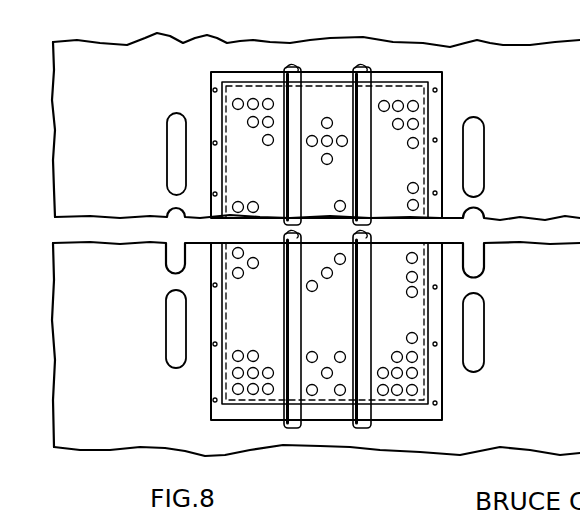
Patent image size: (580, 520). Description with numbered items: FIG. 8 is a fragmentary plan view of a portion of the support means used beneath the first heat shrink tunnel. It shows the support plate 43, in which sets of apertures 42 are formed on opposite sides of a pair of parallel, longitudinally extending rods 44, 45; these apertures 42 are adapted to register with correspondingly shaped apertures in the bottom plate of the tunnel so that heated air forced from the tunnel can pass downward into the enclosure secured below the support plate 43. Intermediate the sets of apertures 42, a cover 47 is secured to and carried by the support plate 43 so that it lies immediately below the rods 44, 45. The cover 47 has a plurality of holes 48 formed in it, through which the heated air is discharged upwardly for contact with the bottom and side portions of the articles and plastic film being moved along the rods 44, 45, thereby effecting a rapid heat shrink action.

The apertures 42 is at (175, 148).
The support plate 43 is at (483, 49).
The rod 44 is at (300, 78).
The rod 45 is at (372, 78).
The cover 47 is at (427, 384).
The holes 48 is at (342, 147).